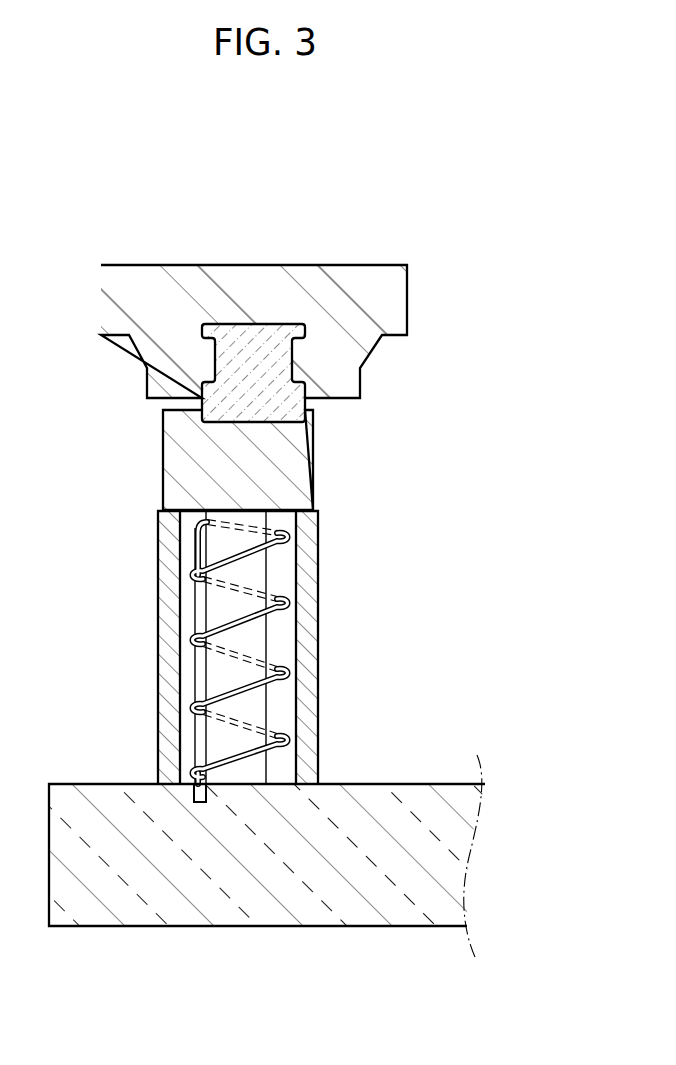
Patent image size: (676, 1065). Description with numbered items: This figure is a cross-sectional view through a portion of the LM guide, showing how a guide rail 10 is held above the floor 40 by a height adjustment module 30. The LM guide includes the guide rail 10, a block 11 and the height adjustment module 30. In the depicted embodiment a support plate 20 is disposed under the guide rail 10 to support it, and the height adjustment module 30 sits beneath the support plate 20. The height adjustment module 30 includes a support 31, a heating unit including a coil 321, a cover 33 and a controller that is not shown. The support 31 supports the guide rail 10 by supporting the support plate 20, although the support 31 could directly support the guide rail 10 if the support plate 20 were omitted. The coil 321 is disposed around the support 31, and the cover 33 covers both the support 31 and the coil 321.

The guide rail 10 is at (274, 367).
The block 11 is at (380, 297).
The support plate 20 is at (296, 462).
The height adjustment module 30 is at (299, 656).
The support 31 is at (256, 707).
The cover 33 is at (305, 635).
The coil 321 is at (272, 672).
The floor 40 is at (262, 898).